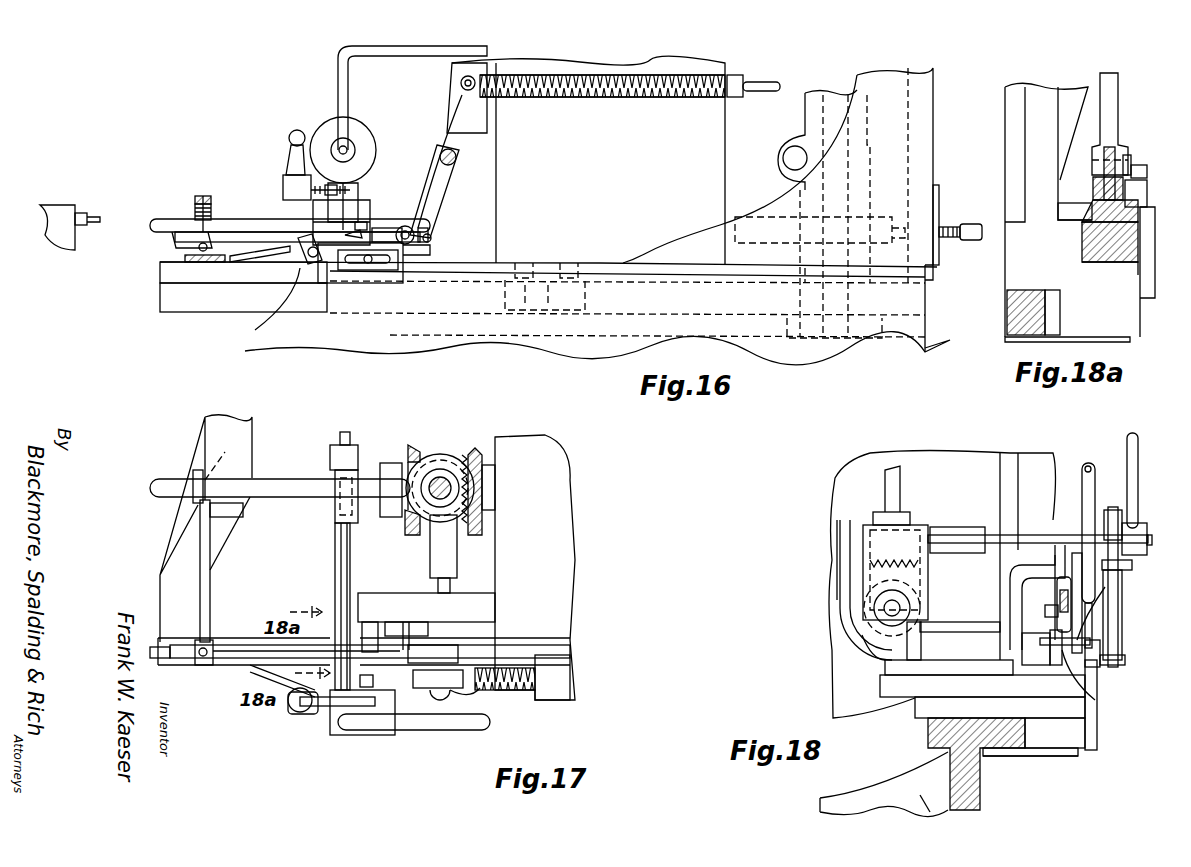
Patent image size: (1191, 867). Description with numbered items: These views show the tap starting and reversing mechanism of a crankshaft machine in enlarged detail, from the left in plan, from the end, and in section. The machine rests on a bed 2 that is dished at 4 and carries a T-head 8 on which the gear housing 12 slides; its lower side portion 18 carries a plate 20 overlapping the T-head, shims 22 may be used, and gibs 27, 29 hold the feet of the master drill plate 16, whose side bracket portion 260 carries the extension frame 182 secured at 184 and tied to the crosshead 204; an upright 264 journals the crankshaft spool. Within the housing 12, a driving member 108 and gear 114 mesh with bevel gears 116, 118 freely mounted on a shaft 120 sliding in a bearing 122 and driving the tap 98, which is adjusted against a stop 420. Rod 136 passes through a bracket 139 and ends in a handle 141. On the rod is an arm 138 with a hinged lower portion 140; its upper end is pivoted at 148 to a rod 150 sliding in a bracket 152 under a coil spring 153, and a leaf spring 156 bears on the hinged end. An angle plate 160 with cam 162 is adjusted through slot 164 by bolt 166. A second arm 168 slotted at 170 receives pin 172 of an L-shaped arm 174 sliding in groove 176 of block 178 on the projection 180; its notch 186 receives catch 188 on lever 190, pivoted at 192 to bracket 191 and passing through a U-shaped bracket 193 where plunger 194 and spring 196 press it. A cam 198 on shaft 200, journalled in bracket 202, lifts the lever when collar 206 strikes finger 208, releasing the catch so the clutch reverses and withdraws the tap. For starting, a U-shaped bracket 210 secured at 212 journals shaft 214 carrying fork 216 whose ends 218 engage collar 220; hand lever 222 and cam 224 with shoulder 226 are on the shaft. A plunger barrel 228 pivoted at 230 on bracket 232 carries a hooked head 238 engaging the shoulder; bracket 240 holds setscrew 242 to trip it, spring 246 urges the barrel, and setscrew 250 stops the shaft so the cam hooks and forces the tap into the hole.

In FIG. 18, the bed 2 is at (925, 805).
In FIG. 18, the dished mid portion 4 is at (880, 797).
In FIG. 18, the T-head 8 is at (935, 745).
In FIG. 18A, the T-head 8 is at (1030, 300).
In FIG. 16, the gear housing 12 is at (690, 66).
In FIG. 17, the gear housing 12 is at (550, 490).
In FIG. 18, the gear housing 12 is at (985, 453).
In FIG. 16, the master drill plate 16 is at (783, 205).
In FIG. 18, the lower side portion of housing 18 is at (1065, 735).
In FIG. 18A, the lower side portion of housing 18 is at (1012, 225).
In FIG. 18, the plate 20 is at (1010, 760).
In FIG. 18, the shim 22 is at (1020, 745).
In FIG. 18, the gib 27 is at (1092, 720).
In FIG. 18A, the gib 27 is at (1148, 292).
In FIG. 18, the gib 29 is at (1035, 665).
In FIG. 18A, the gib 29 is at (1065, 212).
In FIG. 16, the tap 98 is at (950, 238).
In FIG. 17, the shaft 108 is at (442, 478).
In FIG. 18, the shaft 108 is at (888, 478).
In FIG. 17, the gear 114 is at (466, 465).
In FIG. 18, the gear 114 is at (918, 565).
In FIG. 17, the bevel gear 116 is at (414, 448).
In FIG. 18, the bevel gear 116 is at (877, 652).
In FIG. 17, the bevel gear 118 is at (480, 452).
In FIG. 16, the shaft 120 is at (160, 222).
In FIG. 17, the shaft 120 is at (290, 479).
In FIG. 18, the shaft 120 is at (884, 608).
In FIG. 17, the bearing 122 is at (495, 480).
In FIG. 16, the rod 136 is at (456, 160).
In FIG. 17, the rod 136 is at (450, 588).
In FIG. 16, the arm 138 is at (470, 118).
In FIG. 17, the arm 138 is at (434, 455).
In FIG. 18, the arm 138 is at (1095, 490).
In FIG. 16, the bracket 139 is at (427, 150).
In FIG. 17, the bracket 139 is at (495, 607).
In FIG. 18, the bracket 139 is at (1000, 480).
In FIG. 17, the lower portion of arm 140 is at (440, 698).
In FIG. 17, the handle 141 is at (470, 694).
In FIG. 16, the pivot 148 is at (475, 78).
In FIG. 17, the pivot 148 is at (450, 678).
In FIG. 16, the rod 150 is at (585, 75).
In FIG. 17, the rod 150 is at (520, 678).
In FIG. 16, the bracket 152 is at (738, 80).
In FIG. 16, the coil spring 153 is at (635, 75).
In FIG. 17, the coil spring 153 is at (568, 680).
In FIG. 17, the leaf spring 156 is at (372, 687).
In FIG. 16, the angle plate 160 is at (395, 262).
In FIG. 18A, the angle plate 160 is at (1147, 192).
In FIG. 16, the cam 162 is at (380, 230).
In FIG. 18A, the cam 162 is at (1147, 170).
In FIG. 16, the slot 164 is at (352, 270).
In FIG. 16, the retaining bolt 166 is at (368, 263).
In FIG. 16, the second arm 168 is at (442, 185).
In FIG. 17, the second arm 168 is at (440, 652).
In FIG. 18, the second arm 168 is at (1108, 572).
In FIG. 18A, the second arm 168 is at (1112, 90).
In FIG. 16, the slot 170 is at (430, 232).
In FIG. 16, the pin 172 is at (431, 240).
In FIG. 18A, the pin 172 is at (1100, 175).
In FIG. 16, the L-shaped arm 174 is at (425, 255).
In FIG. 18A, the L-shaped arm 174 is at (1131, 163).
In FIG. 18A, the groove 176 is at (1090, 210).
In FIG. 16, the block 178 is at (325, 283).
In FIG. 17, the block 178 is at (380, 640).
In FIG. 18A, the block 178 is at (1093, 190).
In FIG. 16, the projection 180 is at (165, 270).
In FIG. 18, the projection 180 is at (1098, 655).
In FIG. 18A, the projection 180 is at (1085, 240).
In FIG. 16, the extension frame 182 is at (165, 300).
In FIG. 18A, the extension frame 182 is at (1118, 264).
In FIG. 16, the bolts and dowels 184 is at (590, 297).
In FIG. 16, the notch 186 is at (348, 236).
In FIG. 16, the catch 188 is at (360, 226).
In FIG. 16, the lever 190 is at (245, 235).
In FIG. 17, the lever 190 is at (245, 650).
In FIG. 18, the lever 190 is at (1056, 665).
In FIG. 18A, the lever 190 is at (1115, 150).
In FIG. 17, the bracket 191 is at (420, 630).
In FIG. 18, the bracket 191 is at (1003, 668).
In FIG. 16, the pivot 192 is at (405, 226).
In FIG. 17, the pivot 192 is at (406, 622).
In FIG. 16, the U-shaped bracket 193 is at (212, 205).
In FIG. 17, the U-shaped bracket 193 is at (200, 648).
In FIG. 18, the U-shaped bracket 193 is at (1057, 595).
In FIG. 16, the plunger 194 is at (195, 215).
In FIG. 16, the coil spring 196 is at (203, 196).
In FIG. 18, the coil spring 196 is at (1045, 610).
In FIG. 16, the cam 198 is at (178, 245).
In FIG. 18, the cam 198 is at (1085, 685).
In FIG. 16, the shaft 200 is at (203, 252).
In FIG. 17, the shaft 200 is at (210, 585).
In FIG. 17, the bracket 202 is at (235, 517).
In FIG. 17, the crosshead 204 is at (205, 425).
In FIG. 18, the crosshead 204 is at (900, 680).
In FIG. 17, the collar 206 is at (193, 480).
In FIG. 18, the collar 206 is at (907, 640).
In FIG. 17, the finger 208 is at (225, 457).
In FIG. 16, the U-shaped mounting bracket 210 is at (368, 160).
In FIG. 17, the U-shaped mounting bracket 210 is at (336, 445).
In FIG. 18, the U-shaped mounting bracket 210 is at (1016, 570).
In FIG. 18, the extension of gear housing 212 is at (970, 622).
In FIG. 16, the shaft 214 is at (396, 128).
In FIG. 17, the shaft 214 is at (350, 435).
In FIG. 18, the shaft 214 is at (990, 535).
In FIG. 17, the fork 216 is at (338, 500).
In FIG. 18, the fork 216 is at (872, 525).
In FIG. 18, the fork ends 218 is at (863, 590).
In FIG. 17, the collar 220 is at (358, 480).
In FIG. 18, the collar 220 is at (845, 625).
In FIG. 16, the hand lever 222 is at (340, 55).
In FIG. 17, the hand lever 222 is at (420, 730).
In FIG. 18, the hand lever 222 is at (1128, 450).
In FIG. 16, the cam 224 is at (350, 140).
In FIG. 17, the cam 224 is at (370, 735).
In FIG. 16, the shoulder 226 is at (330, 115).
In FIG. 16, the plunger barrel 228 is at (285, 180).
In FIG. 17, the plunger barrel 228 is at (292, 710).
In FIG. 18, the plunger barrel 228 is at (1122, 590).
In FIG. 16, the pivot 230 is at (305, 250).
In FIG. 16, the bracket 232 is at (313, 258).
In FIG. 16, the hook-shaped head 238 is at (292, 135).
In FIG. 17, the hook-shaped head 238 is at (325, 706).
In FIG. 16, the bracket 240 is at (270, 252).
In FIG. 17, the bracket 240 is at (268, 676).
In FIG. 16, the setscrew 242 is at (360, 195).
In FIG. 16, the spring 246 is at (255, 330).
In FIG. 16, the setscrew 250 is at (93, 213).
In FIG. 16, the bracket portion 260 is at (745, 225).
In FIG. 16, the upright 264 is at (815, 100).
In FIG. 16, the knob 420 is at (968, 224).